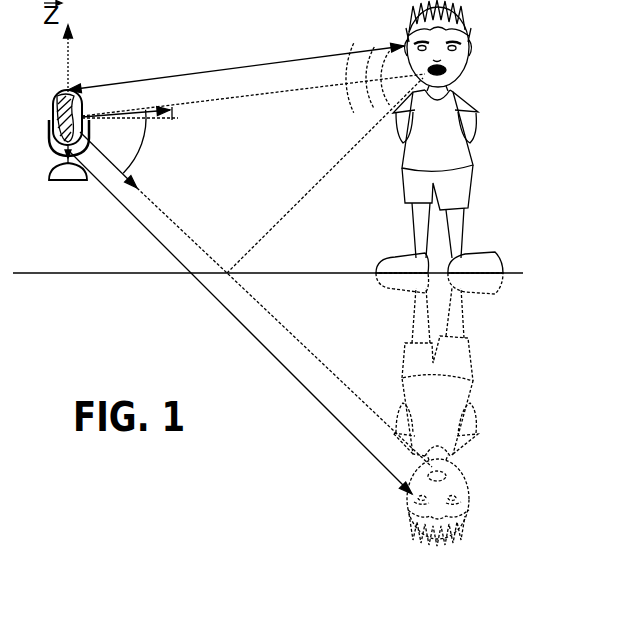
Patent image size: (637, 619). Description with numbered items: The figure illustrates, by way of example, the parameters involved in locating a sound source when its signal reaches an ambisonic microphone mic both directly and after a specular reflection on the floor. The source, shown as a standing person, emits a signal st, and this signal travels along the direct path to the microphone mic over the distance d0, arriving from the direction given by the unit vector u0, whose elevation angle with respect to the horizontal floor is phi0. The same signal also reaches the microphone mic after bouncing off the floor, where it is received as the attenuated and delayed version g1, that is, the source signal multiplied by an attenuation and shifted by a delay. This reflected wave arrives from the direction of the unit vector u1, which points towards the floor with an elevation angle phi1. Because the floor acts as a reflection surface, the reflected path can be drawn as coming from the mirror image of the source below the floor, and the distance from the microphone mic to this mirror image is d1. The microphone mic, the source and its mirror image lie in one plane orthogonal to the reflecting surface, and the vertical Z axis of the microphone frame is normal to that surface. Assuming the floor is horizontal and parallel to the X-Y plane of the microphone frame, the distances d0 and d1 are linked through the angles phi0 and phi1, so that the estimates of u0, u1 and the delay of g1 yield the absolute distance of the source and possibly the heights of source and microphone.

The ambisonic microphone mic is at (69, 135).
The distance d0 is at (236, 63).
The direction vector U0 u0 is at (140, 107).
The elevation angle PHI0 phi0 is at (146, 119).
The signal s(t) st is at (253, 79).
The elevation angle PHI1 phi1 is at (146, 141).
The direction vector U1 u1 is at (112, 164).
The reflected signal g1 s(t-TAU1) g1 is at (284, 272).
The distance d1 is at (241, 323).